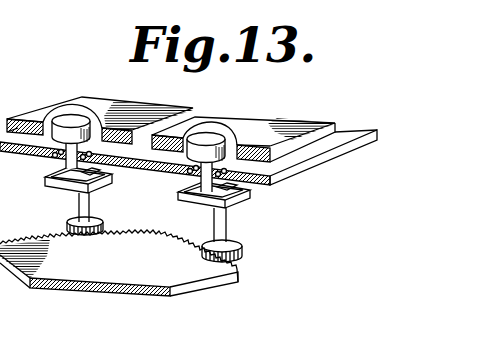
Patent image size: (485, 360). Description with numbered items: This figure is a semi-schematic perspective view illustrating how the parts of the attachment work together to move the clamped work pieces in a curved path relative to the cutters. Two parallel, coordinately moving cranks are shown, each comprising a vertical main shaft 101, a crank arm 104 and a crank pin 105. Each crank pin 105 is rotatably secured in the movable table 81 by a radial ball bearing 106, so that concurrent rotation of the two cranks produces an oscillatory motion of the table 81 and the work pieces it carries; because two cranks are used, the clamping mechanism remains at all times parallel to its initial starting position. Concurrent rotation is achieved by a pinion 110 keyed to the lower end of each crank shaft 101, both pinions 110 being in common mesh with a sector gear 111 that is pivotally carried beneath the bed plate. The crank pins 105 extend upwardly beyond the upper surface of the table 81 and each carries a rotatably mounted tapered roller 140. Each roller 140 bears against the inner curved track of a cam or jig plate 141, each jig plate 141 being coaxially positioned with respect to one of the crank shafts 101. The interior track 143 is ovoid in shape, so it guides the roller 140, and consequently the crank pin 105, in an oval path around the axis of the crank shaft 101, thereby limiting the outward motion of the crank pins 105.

The table 81 is at (320, 166).
The main shaft 101 is at (88, 200).
The crank arm 104 is at (53, 191).
The crank pin 105 is at (57, 172).
The radial ball bearing 106 is at (52, 154).
The pinion 110 is at (68, 221).
The sector gear 111 is at (136, 248).
The tapered roller 140 is at (58, 114).
The jig plate 141 is at (115, 100).
The interior track 143 is at (78, 117).